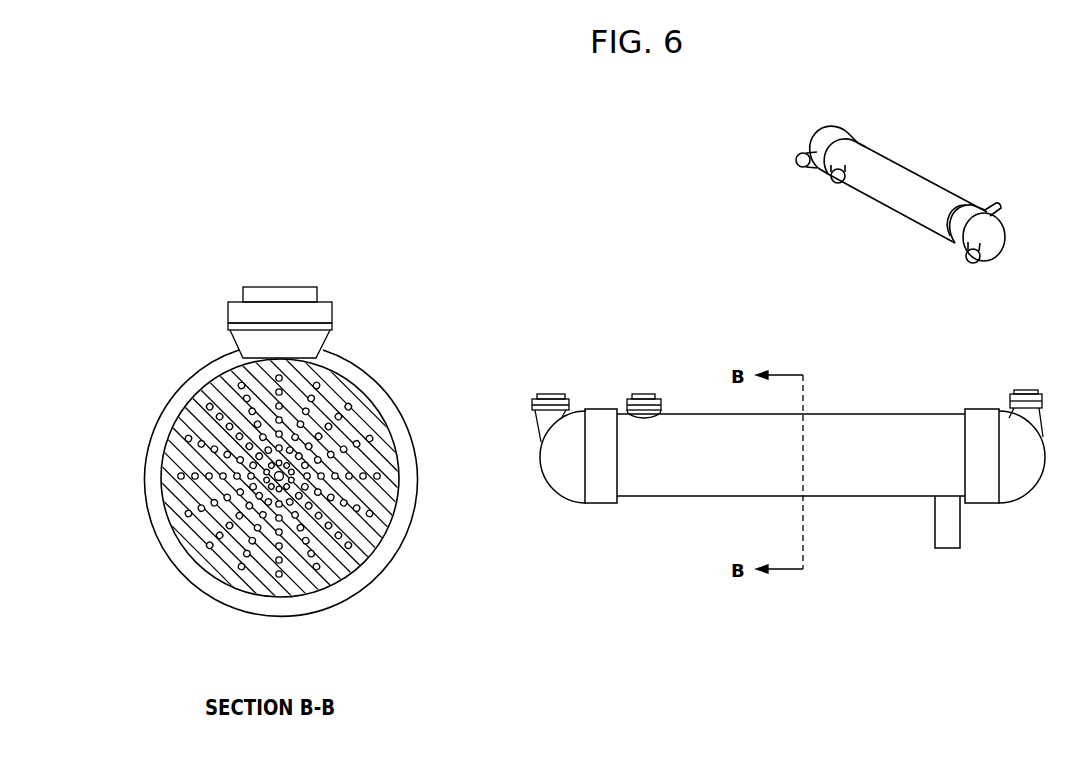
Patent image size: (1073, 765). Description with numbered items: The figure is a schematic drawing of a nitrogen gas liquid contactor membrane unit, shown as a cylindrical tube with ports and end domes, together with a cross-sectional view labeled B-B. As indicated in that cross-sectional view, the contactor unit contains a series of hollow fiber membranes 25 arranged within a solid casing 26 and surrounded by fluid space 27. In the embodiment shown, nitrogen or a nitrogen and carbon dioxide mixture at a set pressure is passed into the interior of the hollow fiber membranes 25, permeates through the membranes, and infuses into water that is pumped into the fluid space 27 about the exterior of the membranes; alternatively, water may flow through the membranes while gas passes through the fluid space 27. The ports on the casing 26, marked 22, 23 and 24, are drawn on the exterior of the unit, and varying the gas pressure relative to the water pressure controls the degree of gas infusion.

The first fluid fitting 22 is at (552, 392).
The second fluid fitting 23 is at (643, 392).
The third fluid fitting 24 is at (1027, 390).
The hollow fiber membranes 25 is at (347, 552).
The solid casing 26 is at (402, 520).
The fluid space 27 is at (323, 572).